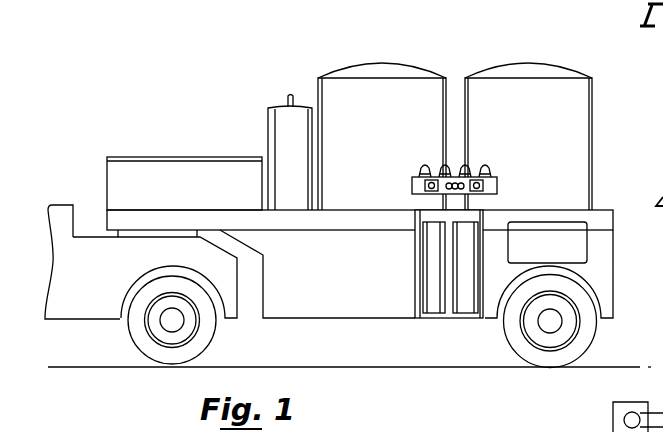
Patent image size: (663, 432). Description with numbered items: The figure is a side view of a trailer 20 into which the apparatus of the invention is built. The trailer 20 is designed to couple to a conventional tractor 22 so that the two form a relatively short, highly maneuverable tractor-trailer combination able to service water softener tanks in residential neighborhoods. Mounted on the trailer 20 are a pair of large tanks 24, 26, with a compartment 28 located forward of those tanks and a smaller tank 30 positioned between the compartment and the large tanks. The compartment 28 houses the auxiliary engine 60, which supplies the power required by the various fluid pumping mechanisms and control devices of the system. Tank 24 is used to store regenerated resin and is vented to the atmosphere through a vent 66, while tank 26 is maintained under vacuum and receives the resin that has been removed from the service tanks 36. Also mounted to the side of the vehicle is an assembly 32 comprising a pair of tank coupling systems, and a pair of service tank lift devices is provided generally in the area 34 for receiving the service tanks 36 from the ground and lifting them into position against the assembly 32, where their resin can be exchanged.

The trailer 20 is at (622, 228).
The tractor 22 is at (85, 322).
The tank 24 is at (413, 63).
The tank 26 is at (510, 60).
The compartment 28 is at (188, 157).
The smaller tank 30 is at (281, 106).
The assembly 32 is at (412, 187).
The area 34 is at (414, 299).
The service tanks 36 is at (437, 308).
The auxiliary engine 60 is at (613, 412).
The vent 66 is at (536, 427).